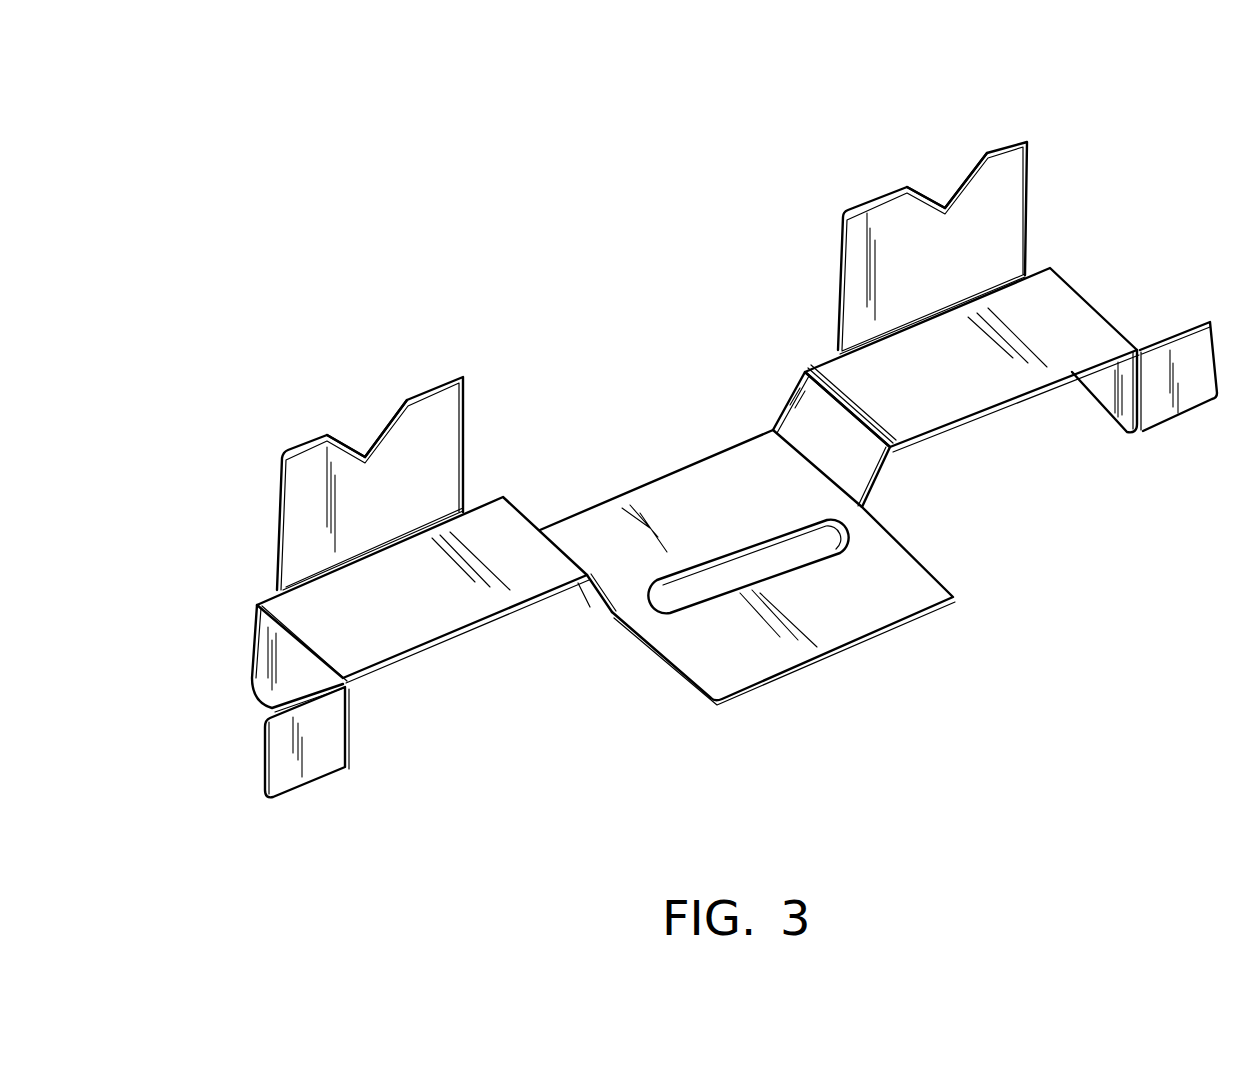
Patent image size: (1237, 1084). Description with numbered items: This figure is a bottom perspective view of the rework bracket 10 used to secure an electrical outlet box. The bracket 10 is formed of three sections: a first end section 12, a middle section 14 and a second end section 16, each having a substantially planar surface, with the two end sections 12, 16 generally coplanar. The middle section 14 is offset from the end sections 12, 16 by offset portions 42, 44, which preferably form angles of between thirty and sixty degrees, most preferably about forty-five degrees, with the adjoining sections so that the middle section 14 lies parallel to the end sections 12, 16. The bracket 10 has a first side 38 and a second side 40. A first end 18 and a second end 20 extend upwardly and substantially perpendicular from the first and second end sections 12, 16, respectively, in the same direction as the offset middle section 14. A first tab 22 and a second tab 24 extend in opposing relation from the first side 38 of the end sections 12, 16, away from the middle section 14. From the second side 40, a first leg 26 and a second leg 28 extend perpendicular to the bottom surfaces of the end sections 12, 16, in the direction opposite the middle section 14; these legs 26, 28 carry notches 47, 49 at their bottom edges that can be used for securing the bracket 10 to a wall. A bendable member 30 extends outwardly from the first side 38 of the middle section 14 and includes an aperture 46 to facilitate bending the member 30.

The rework bracket 10 is at (857, 796).
The first end section 12 is at (1050, 307).
The middle section 14 is at (732, 470).
The second end section 16 is at (340, 598).
The first end 18 is at (1103, 378).
The second end 20 is at (291, 663).
The first tab 22 is at (1200, 378).
The second tab 24 is at (322, 747).
The first leg 26 is at (1008, 135).
The second leg 28 is at (298, 440).
The bendable member 30 is at (827, 613).
The first side 38 is at (398, 658).
The second side 40 is at (495, 497).
The offset portion 42 is at (817, 410).
The offset portion 44 is at (588, 597).
The aperture 46 is at (808, 540).
The notch 47 is at (367, 435).
The notch 49 is at (943, 197).